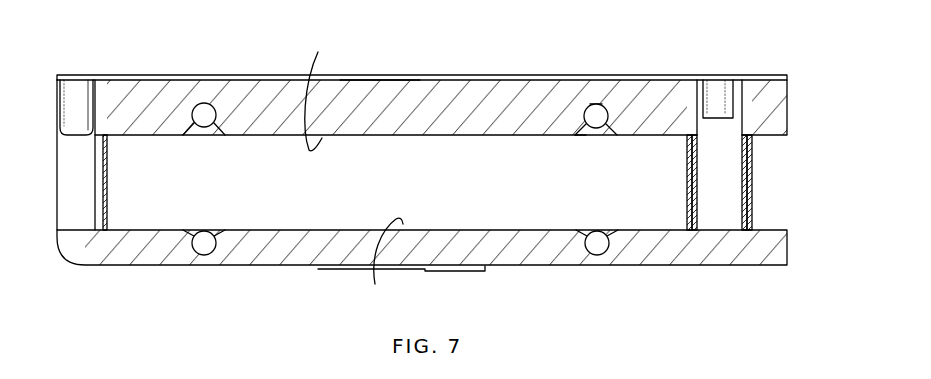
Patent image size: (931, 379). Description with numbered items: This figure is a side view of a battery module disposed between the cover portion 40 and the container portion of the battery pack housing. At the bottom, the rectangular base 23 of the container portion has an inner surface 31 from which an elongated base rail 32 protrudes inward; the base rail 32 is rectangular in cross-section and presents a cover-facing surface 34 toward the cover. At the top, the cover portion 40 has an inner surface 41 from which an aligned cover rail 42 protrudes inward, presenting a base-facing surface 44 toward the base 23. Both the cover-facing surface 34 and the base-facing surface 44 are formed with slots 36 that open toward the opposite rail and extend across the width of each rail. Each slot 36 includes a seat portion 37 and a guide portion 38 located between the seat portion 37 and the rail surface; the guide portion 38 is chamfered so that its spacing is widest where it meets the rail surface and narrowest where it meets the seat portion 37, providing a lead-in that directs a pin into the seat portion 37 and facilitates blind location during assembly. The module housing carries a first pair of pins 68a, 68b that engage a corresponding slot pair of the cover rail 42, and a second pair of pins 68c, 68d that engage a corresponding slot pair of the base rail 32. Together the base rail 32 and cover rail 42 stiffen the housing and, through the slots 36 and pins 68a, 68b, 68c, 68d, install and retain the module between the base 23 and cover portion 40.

The cover portion 40 is at (136, 75).
The inner surface 41 is at (386, 86).
The cover rail 42 is at (442, 98).
The base-facing surface 44 is at (313, 91).
The seat portion 37 is at (594, 104).
The guide portion 38 is at (585, 138).
The slot 36 is at (600, 138).
The base rail 32 is at (331, 249).
The cover-facing surface 34 is at (383, 266).
The base 23 is at (517, 228).
The inner surface 31 is at (422, 197).
The pin 68a is at (204, 103).
The pin 68b is at (602, 105).
The pin 68c is at (203, 247).
The pin 68d is at (598, 256).